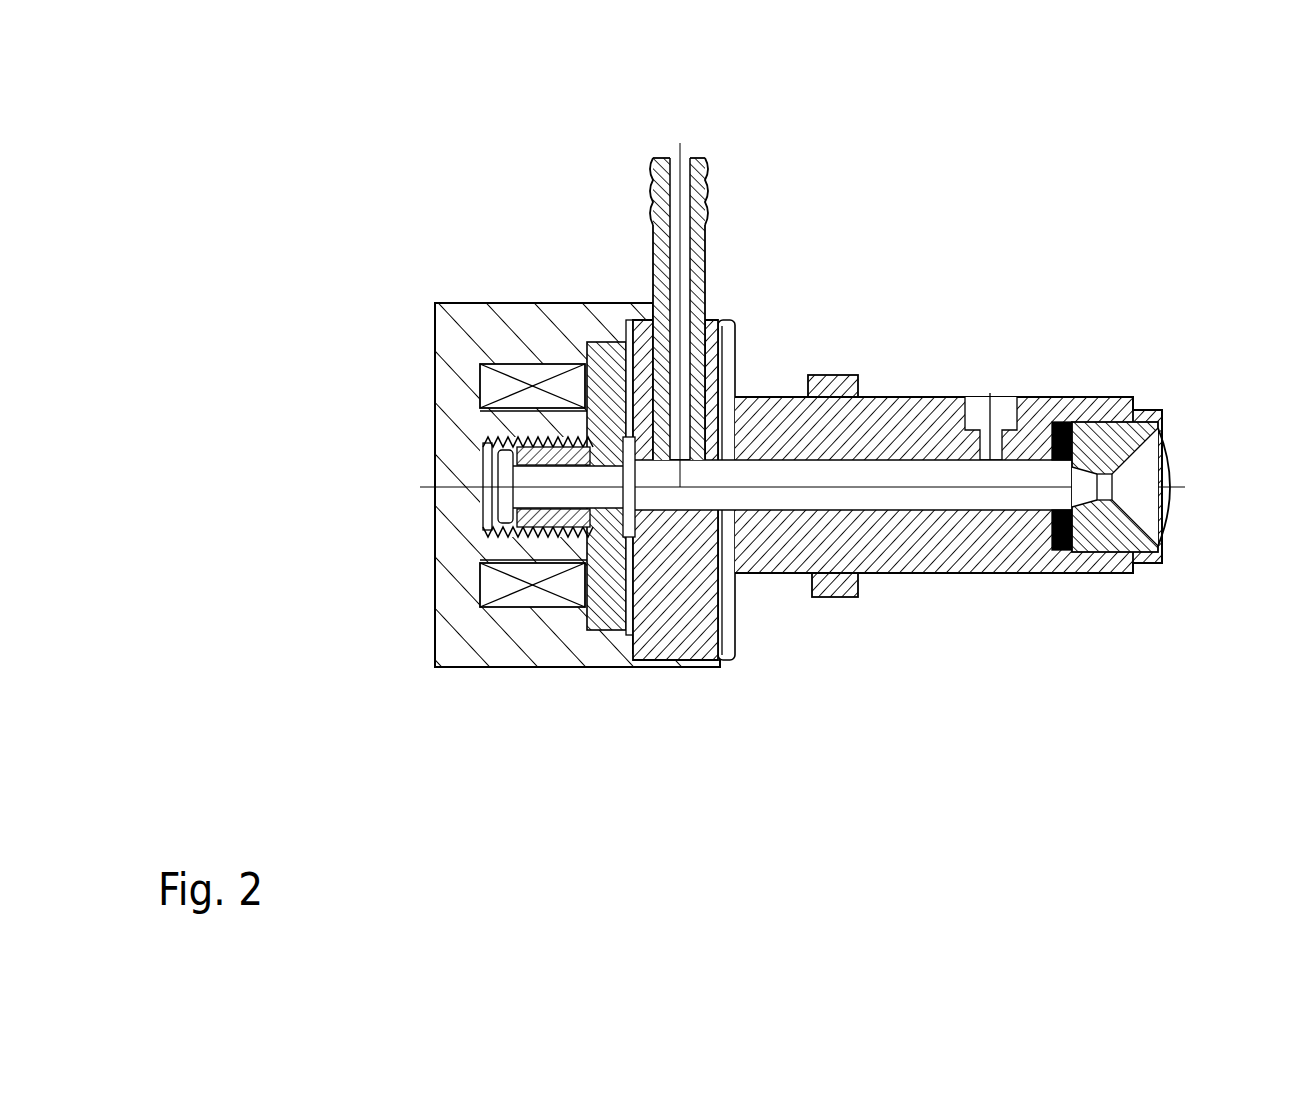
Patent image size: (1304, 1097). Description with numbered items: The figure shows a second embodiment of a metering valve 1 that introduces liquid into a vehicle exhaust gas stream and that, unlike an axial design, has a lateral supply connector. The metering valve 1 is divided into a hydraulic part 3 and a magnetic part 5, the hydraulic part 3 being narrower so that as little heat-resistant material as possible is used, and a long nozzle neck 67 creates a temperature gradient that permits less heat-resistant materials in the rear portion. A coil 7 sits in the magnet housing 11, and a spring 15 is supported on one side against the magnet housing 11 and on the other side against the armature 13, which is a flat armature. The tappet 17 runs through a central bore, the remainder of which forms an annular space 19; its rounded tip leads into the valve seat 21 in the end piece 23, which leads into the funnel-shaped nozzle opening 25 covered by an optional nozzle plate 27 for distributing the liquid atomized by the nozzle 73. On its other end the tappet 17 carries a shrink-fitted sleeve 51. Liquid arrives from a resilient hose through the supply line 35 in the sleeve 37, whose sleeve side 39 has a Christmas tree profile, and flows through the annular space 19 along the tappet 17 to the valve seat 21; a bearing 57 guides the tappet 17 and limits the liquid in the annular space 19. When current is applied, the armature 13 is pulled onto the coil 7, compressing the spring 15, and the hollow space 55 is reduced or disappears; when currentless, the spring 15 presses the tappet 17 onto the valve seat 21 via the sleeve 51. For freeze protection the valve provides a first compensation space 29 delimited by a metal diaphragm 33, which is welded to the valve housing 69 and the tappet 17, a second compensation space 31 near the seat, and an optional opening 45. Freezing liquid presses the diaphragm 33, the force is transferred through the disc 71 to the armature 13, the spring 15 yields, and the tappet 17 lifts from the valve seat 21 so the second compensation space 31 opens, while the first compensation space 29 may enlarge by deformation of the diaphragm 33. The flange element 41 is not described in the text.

The metering valve 1 is at (594, 692).
The hydraulic part 3 is at (883, 363).
The magnetic part 5 is at (265, 449).
The coil 7 is at (501, 390).
The magnet housing 11 is at (489, 329).
The armature 13 is at (730, 317).
The spring 15 is at (530, 531).
The tappet 17 is at (862, 485).
The annular space 19 is at (920, 508).
The valve seat 21 is at (1079, 512).
The end piece 23 is at (1130, 520).
The nozzle opening 25 is at (1160, 452).
The nozzle plate 27 is at (1166, 520).
The first compensation space 29 is at (520, 443).
The second compensation space 31 is at (1105, 503).
The diaphragm 33 is at (540, 410).
The supply line 35 is at (702, 172).
The sleeve 37 is at (705, 263).
The sleeve side 39 is at (705, 193).
The flange 41 is at (591, 629).
The opening 45 is at (1007, 405).
The sleeve 51 is at (496, 500).
The hollow space 55 is at (583, 574).
The bearing 57 is at (1078, 468).
The nozzle neck 67 is at (920, 397).
The valve housing 69 is at (832, 598).
The disc 71 is at (580, 540).
The nozzle 73 is at (1124, 478).